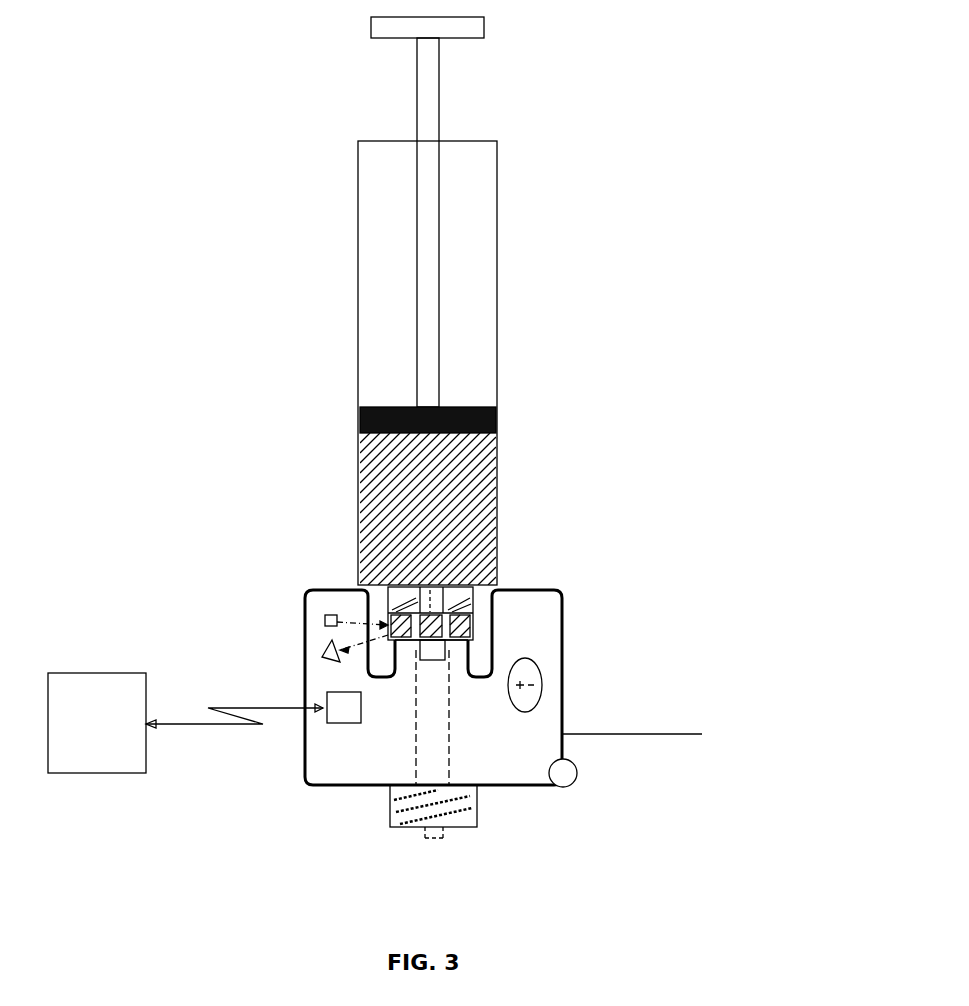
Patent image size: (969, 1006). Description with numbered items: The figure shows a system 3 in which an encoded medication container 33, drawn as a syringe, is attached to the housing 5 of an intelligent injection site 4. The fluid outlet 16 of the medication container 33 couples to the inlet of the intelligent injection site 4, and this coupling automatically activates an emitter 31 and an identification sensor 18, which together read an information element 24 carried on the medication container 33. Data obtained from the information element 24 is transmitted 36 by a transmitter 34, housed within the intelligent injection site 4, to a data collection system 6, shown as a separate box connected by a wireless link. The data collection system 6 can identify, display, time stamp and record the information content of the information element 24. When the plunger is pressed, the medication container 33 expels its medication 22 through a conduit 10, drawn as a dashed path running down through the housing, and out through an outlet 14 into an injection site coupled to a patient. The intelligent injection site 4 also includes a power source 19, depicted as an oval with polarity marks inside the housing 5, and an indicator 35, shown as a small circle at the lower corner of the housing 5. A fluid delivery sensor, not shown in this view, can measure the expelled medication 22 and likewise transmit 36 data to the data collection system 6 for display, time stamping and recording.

The system 3 is at (192, 885).
The intelligent injection site 4 is at (305, 788).
The housing 5 is at (641, 735).
The data collection system 6 is at (97, 723).
The conduit 10 is at (416, 742).
The outlet 14 is at (435, 840).
The fluid outlet 16 is at (445, 660).
The identification sensor 18 is at (322, 657).
The power source 19 is at (542, 690).
The medication 22 is at (500, 512).
The information element 24 is at (474, 628).
The emitter 31 is at (325, 622).
The medication container 33 is at (498, 312).
The transmitter 34 is at (344, 707).
The indicator 35 is at (577, 777).
The transmission 36 is at (179, 720).